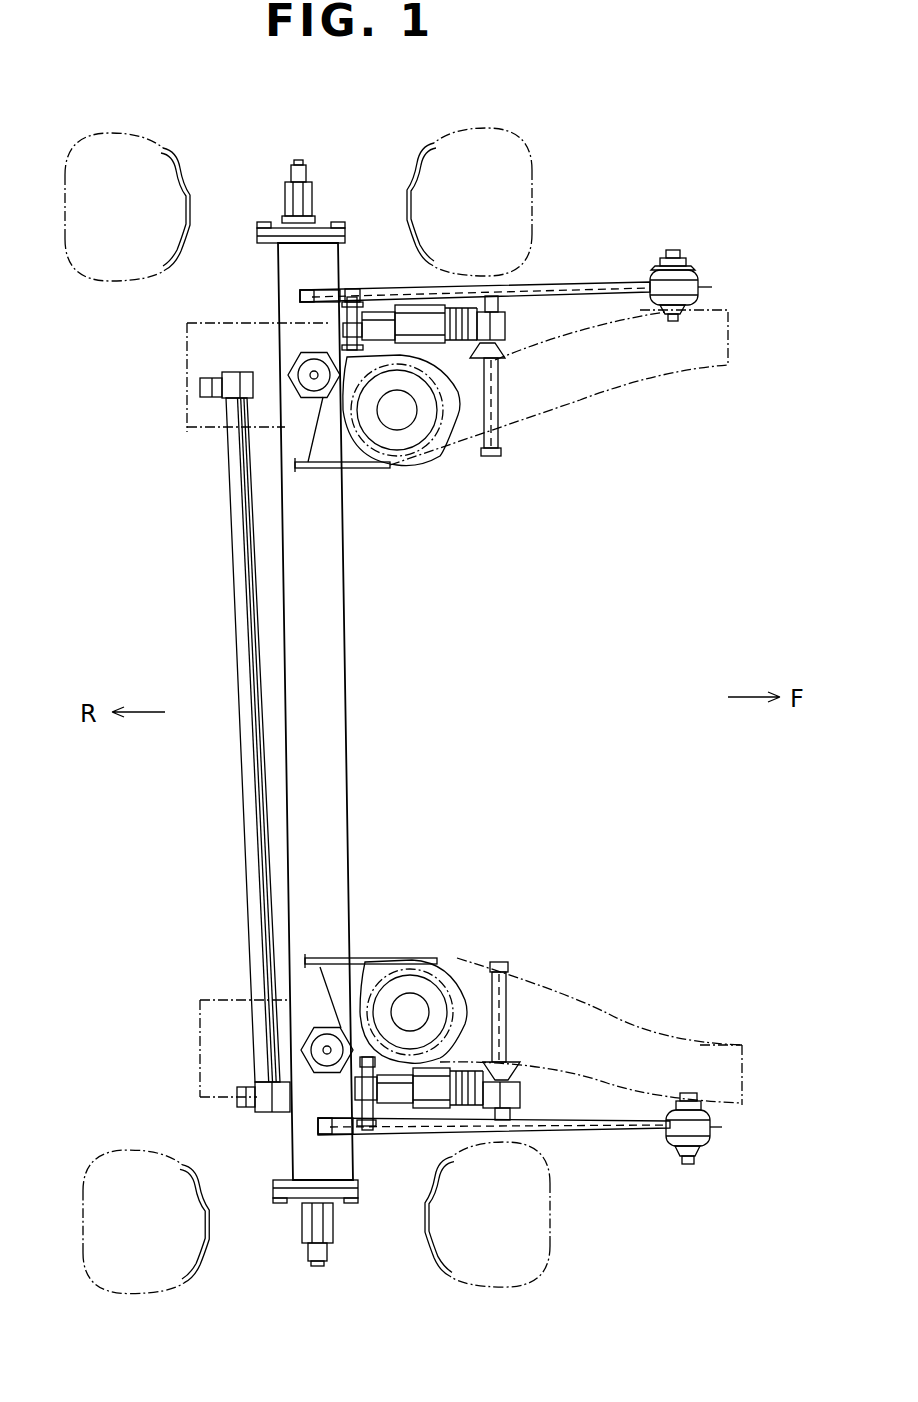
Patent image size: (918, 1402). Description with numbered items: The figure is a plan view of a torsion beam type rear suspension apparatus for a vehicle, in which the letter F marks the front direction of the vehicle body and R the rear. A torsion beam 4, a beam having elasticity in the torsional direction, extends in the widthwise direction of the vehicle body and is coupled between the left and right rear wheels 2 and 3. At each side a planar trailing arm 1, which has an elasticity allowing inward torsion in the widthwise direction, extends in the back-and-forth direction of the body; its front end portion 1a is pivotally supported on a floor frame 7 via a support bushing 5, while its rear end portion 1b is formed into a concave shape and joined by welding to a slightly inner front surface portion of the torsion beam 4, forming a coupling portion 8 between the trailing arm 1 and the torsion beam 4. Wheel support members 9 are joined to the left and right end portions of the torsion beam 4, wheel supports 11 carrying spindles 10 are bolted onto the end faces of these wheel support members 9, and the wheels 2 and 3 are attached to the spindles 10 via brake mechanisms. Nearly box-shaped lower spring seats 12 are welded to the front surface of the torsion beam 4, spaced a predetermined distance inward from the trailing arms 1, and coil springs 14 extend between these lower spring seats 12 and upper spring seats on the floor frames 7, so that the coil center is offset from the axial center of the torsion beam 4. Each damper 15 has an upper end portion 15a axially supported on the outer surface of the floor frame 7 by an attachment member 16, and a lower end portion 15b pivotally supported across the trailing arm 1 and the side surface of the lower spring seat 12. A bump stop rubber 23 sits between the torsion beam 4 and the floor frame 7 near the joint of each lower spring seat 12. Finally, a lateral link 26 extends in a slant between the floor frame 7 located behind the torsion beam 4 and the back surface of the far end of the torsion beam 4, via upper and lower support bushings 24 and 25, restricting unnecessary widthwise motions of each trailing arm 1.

The trailing arm 1 is at (565, 285).
The front end portion 1a is at (706, 287).
The rear end portion 1b is at (317, 291).
The wheel 2 is at (118, 135).
The wheel 3 is at (150, 1292).
The torsion beam 4 is at (332, 792).
The support bushing 5 is at (690, 270).
The floor frame 7 is at (640, 372).
The coupling portion 8 is at (315, 302).
The wheel support member 9 is at (257, 238).
The spindle 10 is at (288, 196).
The wheel support 11 is at (263, 223).
The lower spring seat 12 is at (439, 448).
The coil spring 14 is at (386, 450).
The damper 15 is at (420, 318).
The upper end portion 15a is at (504, 325).
The lower end portion 15b is at (338, 340).
The attachment member 16 is at (501, 453).
The bump stop rubber 23 is at (300, 405).
The upper support bushing 24 is at (235, 400).
The lower support bushing 25 is at (252, 1110).
The lateral link 26 is at (246, 645).